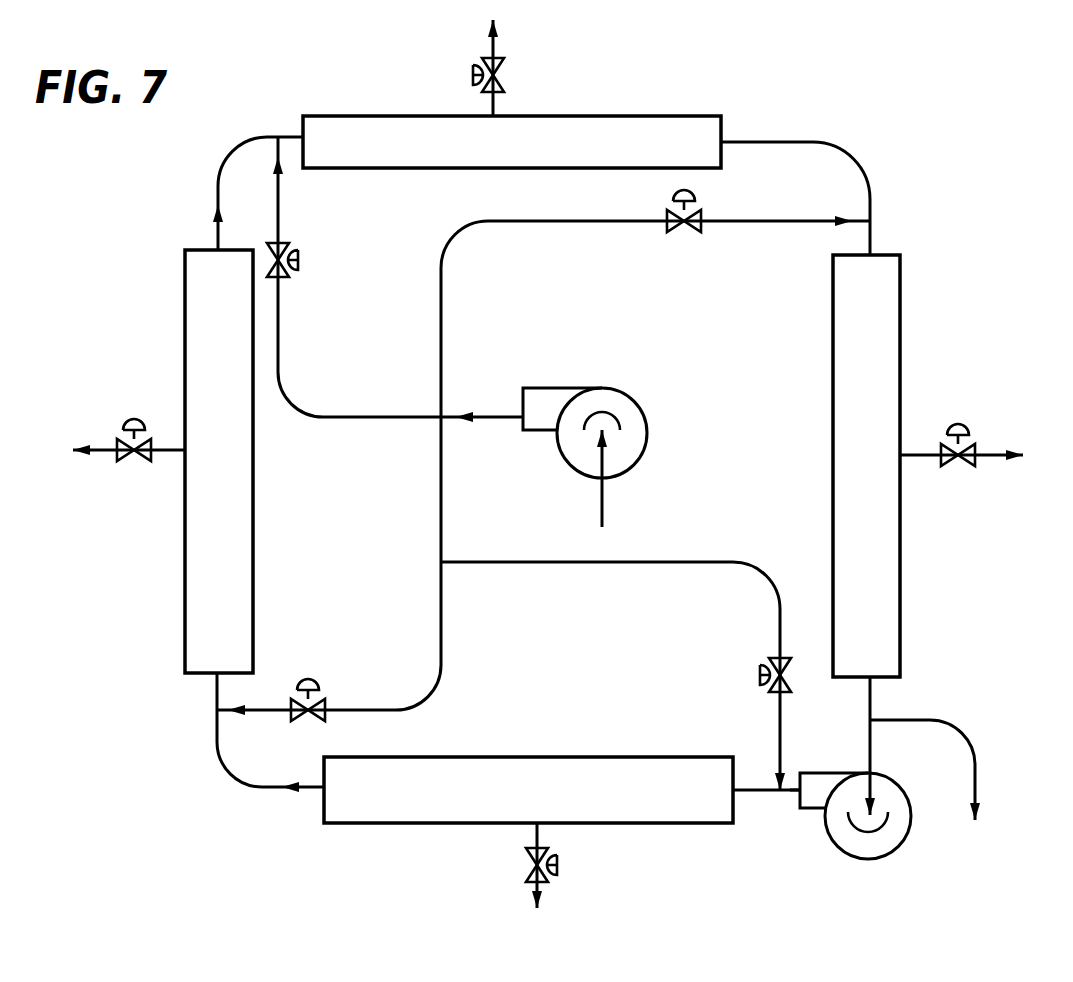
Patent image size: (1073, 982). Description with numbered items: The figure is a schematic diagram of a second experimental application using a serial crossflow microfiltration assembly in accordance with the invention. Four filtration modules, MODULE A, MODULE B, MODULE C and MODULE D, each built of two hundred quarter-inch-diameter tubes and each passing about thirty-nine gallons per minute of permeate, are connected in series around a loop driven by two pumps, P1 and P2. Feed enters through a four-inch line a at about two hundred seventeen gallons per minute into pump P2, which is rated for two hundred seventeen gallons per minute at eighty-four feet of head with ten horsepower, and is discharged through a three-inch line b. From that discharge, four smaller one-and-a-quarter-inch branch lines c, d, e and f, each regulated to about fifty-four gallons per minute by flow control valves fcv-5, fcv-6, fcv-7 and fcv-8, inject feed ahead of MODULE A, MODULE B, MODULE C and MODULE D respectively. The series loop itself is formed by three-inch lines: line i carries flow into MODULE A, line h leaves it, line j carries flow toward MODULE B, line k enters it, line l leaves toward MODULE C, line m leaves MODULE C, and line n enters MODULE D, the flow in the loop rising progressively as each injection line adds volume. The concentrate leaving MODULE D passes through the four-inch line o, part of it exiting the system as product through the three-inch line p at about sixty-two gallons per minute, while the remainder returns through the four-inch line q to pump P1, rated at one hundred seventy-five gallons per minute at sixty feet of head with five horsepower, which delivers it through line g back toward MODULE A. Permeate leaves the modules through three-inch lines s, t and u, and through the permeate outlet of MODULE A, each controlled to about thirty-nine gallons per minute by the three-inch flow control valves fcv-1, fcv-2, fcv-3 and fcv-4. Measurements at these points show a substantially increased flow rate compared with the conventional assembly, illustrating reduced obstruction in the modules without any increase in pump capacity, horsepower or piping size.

The line a is at (602, 492).
The line b is at (490, 417).
The line c is at (780, 733).
The line d is at (281, 713).
The line e is at (281, 194).
The line f is at (787, 221).
The line g is at (795, 792).
The line h is at (756, 791).
The line i is at (310, 787).
The line j is at (217, 690).
The line k is at (222, 183).
The line l is at (297, 137).
The line m is at (745, 142).
The line n is at (870, 252).
The line o is at (870, 698).
The line p is at (935, 720).
The line q is at (870, 737).
The line s is at (176, 450).
The line t is at (496, 112).
The line u is at (933, 455).
The flow control valve fcv-1 is at (573, 865).
The flow control valve fcv-2 is at (120, 432).
The flow control valve fcv-3 is at (461, 76).
The flow control valve fcv-4 is at (985, 423).
The flow control valve fcv-5 is at (748, 676).
The flow control valve fcv-6 is at (328, 672).
The flow control valve fcv-7 is at (312, 256).
The flow control valve fcv-8 is at (690, 232).
The pump P1 is at (855, 816).
The pump P2 is at (585, 433).
The module MODULE A is at (528, 790).
The module MODULE B is at (219, 461).
The module MODULE C is at (512, 142).
The module MODULE D is at (866, 466).